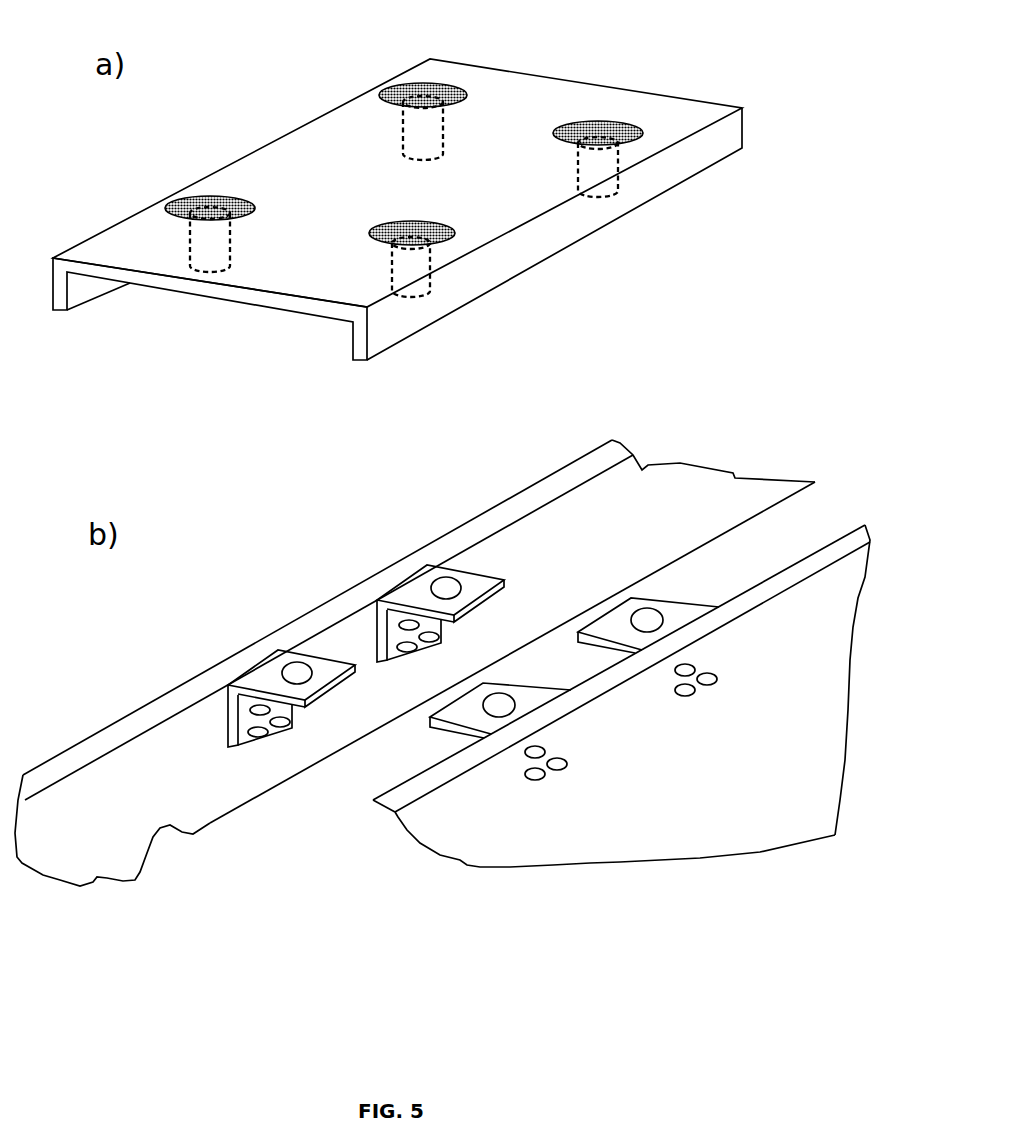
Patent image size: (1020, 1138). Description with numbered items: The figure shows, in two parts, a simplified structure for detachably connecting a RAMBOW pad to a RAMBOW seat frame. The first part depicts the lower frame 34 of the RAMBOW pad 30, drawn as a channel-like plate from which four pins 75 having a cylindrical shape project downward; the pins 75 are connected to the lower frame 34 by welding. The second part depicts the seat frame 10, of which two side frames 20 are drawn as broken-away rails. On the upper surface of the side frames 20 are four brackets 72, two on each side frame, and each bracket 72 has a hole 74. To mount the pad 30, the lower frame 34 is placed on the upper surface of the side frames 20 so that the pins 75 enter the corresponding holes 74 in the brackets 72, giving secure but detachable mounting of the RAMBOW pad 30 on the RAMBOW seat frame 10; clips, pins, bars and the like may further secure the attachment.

In FIG. 5b, the seat frame 10 is at (340, 838).
In FIG. 5b, the side frame 20 is at (662, 505).
In FIG. 5a, the RAMBOW pad 30 is at (366, 46).
In FIG. 5a, the lower frame 34 is at (557, 78).
In FIG. 5b, the bracket 72 is at (262, 677).
In FIG. 5b, the hole 74 is at (300, 676).
In FIG. 5a, the pin 75 is at (418, 135).